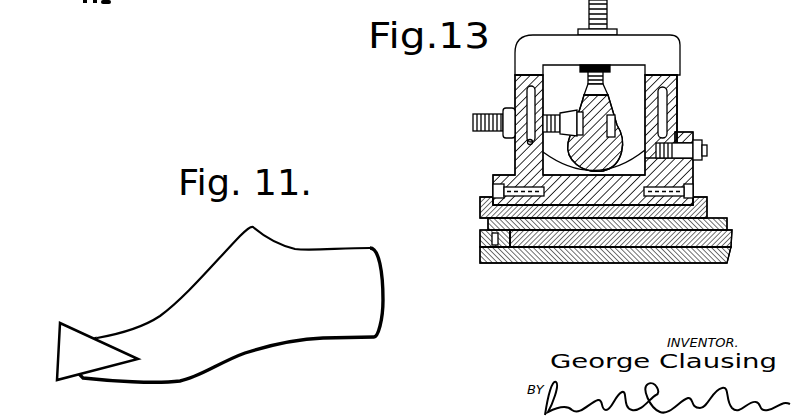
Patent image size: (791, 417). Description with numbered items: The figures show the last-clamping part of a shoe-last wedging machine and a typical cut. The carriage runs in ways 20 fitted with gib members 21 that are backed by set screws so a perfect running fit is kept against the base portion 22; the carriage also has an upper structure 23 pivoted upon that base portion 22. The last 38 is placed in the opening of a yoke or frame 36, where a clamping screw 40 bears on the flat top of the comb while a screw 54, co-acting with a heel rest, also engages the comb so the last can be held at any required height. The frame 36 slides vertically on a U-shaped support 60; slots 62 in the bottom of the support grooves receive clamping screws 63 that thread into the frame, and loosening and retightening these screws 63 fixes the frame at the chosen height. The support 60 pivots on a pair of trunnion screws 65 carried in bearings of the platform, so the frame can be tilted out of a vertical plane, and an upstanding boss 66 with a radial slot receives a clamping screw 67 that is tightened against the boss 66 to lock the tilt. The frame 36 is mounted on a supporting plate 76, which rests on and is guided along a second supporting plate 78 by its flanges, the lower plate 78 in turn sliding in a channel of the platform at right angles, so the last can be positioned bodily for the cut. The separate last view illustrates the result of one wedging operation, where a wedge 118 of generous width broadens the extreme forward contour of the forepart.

In FIG. 11, the wedge 118 is at (77, 331).
In FIG. 13, the ways 20 is at (577, 256).
In FIG. 13, the gib members 21 is at (482, 248).
In FIG. 13, the base portion 22 is at (732, 238).
In FIG. 13, the upper structure 23 is at (488, 225).
In FIG. 13, the yoke or frame 36 is at (660, 44).
In FIG. 13, the last 38 is at (602, 115).
In FIG. 13, the clamping screw 40 is at (609, 15).
In FIG. 13, the screw 54 is at (483, 114).
In FIG. 13, the U-shaped support 60 is at (668, 90).
In FIG. 13, the slots 62 is at (672, 107).
In FIG. 13, the clamping screws 63 is at (527, 142).
In FIG. 13, the trunnion screws 65 is at (495, 187).
In FIG. 13, the upstanding boss 66 is at (683, 135).
In FIG. 13, the clamping screw 67 is at (703, 145).
In FIG. 13, the supporting plate 76 is at (521, 166).
In FIG. 13, the supporting plate 78 is at (480, 203).